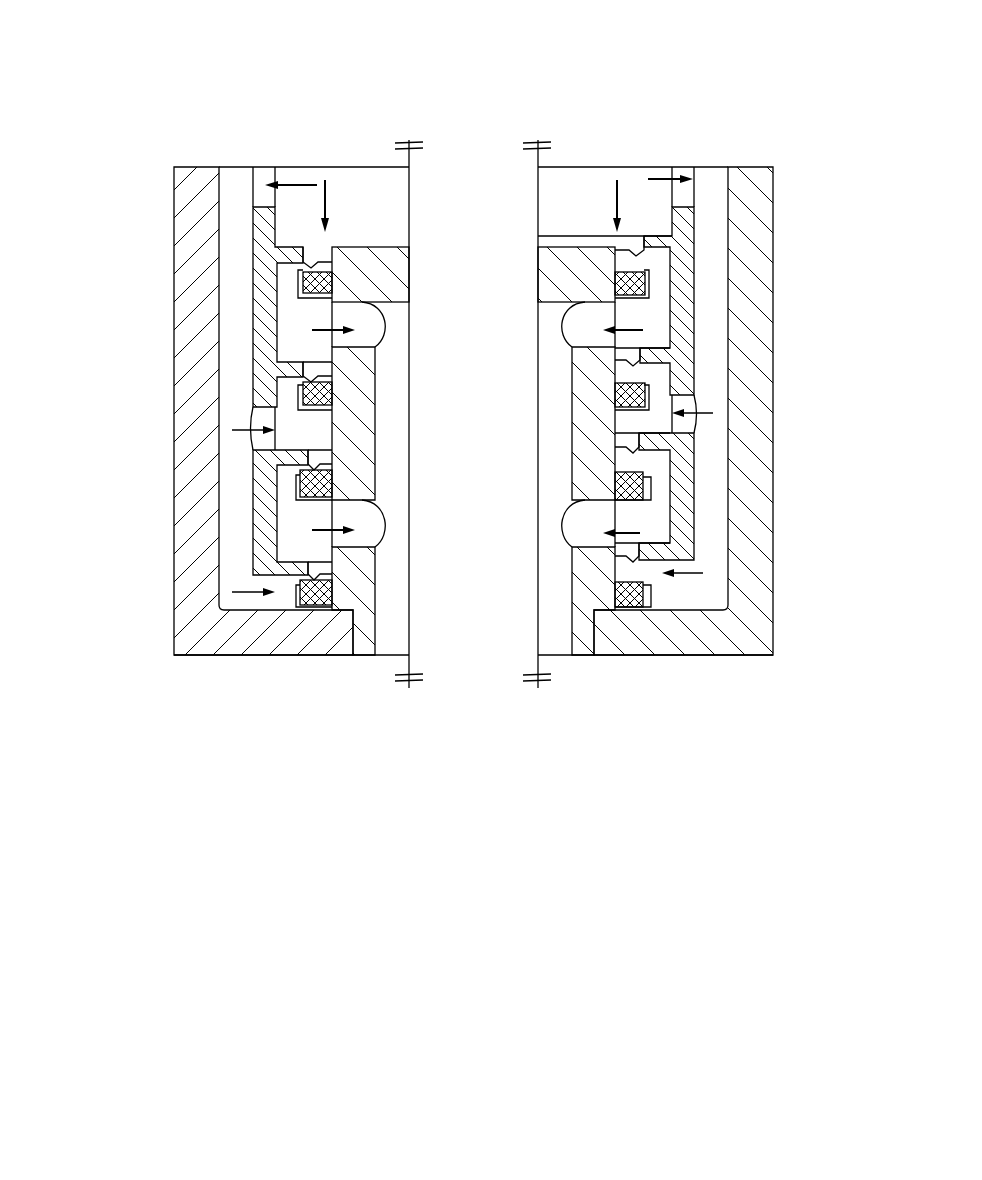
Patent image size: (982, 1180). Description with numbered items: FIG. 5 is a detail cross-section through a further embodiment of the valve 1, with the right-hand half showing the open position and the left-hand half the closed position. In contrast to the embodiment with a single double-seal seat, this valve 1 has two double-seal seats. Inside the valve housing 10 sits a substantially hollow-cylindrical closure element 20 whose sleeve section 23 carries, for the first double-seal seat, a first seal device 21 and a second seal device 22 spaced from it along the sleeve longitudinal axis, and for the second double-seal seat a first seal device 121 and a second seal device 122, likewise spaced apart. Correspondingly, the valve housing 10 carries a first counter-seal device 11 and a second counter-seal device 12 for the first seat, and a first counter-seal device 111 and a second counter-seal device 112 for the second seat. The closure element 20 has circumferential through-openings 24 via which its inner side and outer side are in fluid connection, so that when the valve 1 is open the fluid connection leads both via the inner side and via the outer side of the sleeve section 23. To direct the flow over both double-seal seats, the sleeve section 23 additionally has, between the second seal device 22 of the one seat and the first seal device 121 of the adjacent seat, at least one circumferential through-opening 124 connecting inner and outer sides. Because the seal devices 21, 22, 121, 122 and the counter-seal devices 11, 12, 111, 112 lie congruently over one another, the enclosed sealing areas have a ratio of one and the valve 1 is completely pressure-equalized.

The valve 1 is at (272, 77).
The valve housing 10 is at (367, 637).
The first counter-seal device 11 is at (620, 285).
The second counter-seal device 12 is at (622, 395).
The first counter-seal device 111 is at (622, 485).
The second counter-seal device 112 is at (622, 597).
The closure element 20 is at (258, 308).
The sleeve section 23 is at (462, 391).
The first seal device 21 is at (630, 238).
The second seal device 22 is at (622, 357).
The first seal device 121 is at (630, 450).
The second seal device 122 is at (630, 556).
The through-openings 24 is at (255, 193).
The through-opening 124 is at (230, 432).